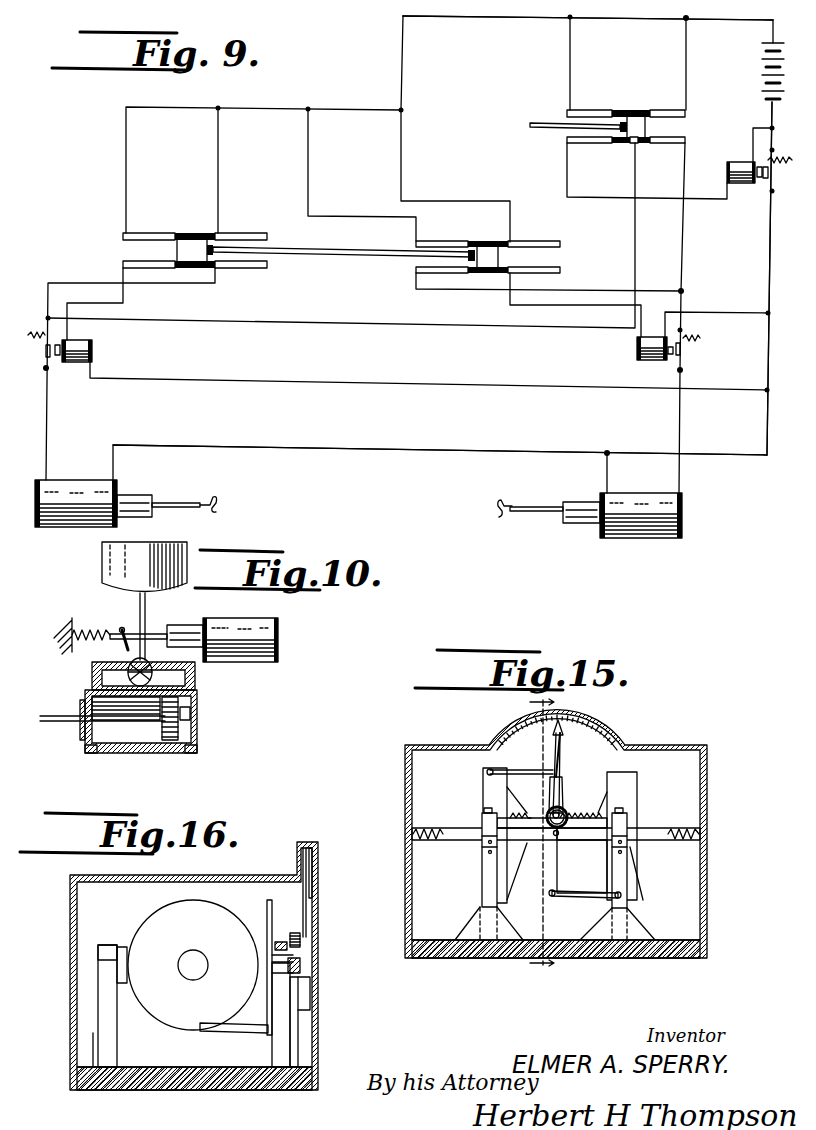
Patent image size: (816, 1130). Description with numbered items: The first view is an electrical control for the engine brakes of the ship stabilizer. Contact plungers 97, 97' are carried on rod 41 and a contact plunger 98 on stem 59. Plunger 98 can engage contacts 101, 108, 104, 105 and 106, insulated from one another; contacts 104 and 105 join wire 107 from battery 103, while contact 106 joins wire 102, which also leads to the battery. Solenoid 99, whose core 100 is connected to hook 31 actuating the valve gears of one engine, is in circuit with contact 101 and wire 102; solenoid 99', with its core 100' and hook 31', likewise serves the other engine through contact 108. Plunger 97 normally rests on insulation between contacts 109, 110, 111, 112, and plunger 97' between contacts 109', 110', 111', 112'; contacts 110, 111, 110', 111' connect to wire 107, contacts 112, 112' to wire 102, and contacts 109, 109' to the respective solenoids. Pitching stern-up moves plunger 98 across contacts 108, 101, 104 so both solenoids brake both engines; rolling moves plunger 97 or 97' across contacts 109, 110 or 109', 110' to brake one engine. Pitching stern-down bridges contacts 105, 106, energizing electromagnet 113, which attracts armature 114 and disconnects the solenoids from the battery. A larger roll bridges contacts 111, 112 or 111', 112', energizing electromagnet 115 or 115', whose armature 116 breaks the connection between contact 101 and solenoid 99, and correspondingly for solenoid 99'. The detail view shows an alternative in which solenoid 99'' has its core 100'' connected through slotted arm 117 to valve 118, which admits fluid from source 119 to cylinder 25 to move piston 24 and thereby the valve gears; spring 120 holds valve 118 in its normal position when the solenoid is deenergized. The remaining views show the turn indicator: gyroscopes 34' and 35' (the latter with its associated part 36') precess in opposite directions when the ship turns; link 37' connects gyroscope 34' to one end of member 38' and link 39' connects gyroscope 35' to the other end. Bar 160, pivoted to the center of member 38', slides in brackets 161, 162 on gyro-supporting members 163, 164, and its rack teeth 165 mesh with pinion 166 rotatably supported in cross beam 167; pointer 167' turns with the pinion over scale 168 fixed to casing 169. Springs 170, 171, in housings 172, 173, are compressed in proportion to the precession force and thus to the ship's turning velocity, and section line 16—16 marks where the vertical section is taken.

In FIG. 9, the wire 107 is at (519, 18).
In FIG. 9, the battery 103 is at (762, 72).
In FIG. 9, the contact 105 is at (592, 110).
In FIG. 9, the contact 104 is at (662, 110).
In FIG. 9, the contact plunger 98 is at (630, 127).
In FIG. 9, the stem or rod 59 is at (571, 141).
In FIG. 9, the contact 101 is at (686, 140).
In FIG. 9, the contact 106 is at (592, 144).
In FIG. 9, the contact 108 is at (636, 144).
In FIG. 9, the armature 114 is at (768, 174).
In FIG. 9, the electromagnet 113 is at (741, 184).
In FIG. 9, the contact 111' is at (155, 222).
In FIG. 9, the contact 110' is at (253, 222).
In FIG. 9, the rod 41 is at (339, 251).
In FIG. 9, the contact 110 is at (445, 231).
In FIG. 9, the contact 111 is at (553, 231).
In FIG. 9, the contact plunger 97' is at (195, 250).
In FIG. 9, the contact plunger 97 is at (488, 257).
In FIG. 9, the contact 112' is at (127, 257).
In FIG. 9, the contact 109' is at (261, 277).
In FIG. 9, the contact 109 is at (424, 279).
In FIG. 9, the contact 112 is at (555, 276).
In FIG. 9, the electromagnet 115' is at (97, 350).
In FIG. 9, the electromagnet 115 is at (631, 352).
In FIG. 9, the armature 116 is at (47, 360).
In FIG. 9, the wire 102 is at (767, 456).
In FIG. 9, the solenoid core 100' is at (143, 493).
In FIG. 9, the pawl 31' is at (192, 490).
In FIG. 9, the solenoid 99' is at (75, 520).
In FIG. 9, the hook 31 is at (530, 496).
In FIG. 9, the core 100 is at (581, 498).
In FIG. 9, the solenoid 99 is at (642, 533).
In FIG. 10, the source 119 is at (144, 601).
In FIG. 10, the spring 120 is at (82, 630).
In FIG. 10, the slotted arm 117 is at (124, 651).
In FIG. 10, the valve 118 is at (150, 667).
In FIG. 10, the core 100'' is at (188, 624).
In FIG. 10, the solenoid 99'' is at (250, 654).
In FIG. 10, the cylinder 25 is at (120, 748).
In FIG. 10, the piston 24 is at (176, 750).
In FIG. 15, the section line 16 is at (535, 842).
In FIG. 15, the scale 168 is at (622, 741).
In FIG. 16, the scale 168 is at (299, 845).
In FIG. 15, the pointer 167' is at (580, 755).
In FIG. 16, the pointer 167' is at (331, 868).
In FIG. 15, the link 37' is at (520, 763).
In FIG. 15, the member 38' is at (574, 767).
In FIG. 16, the member 38' is at (255, 963).
In FIG. 15, the gyroscope 34' is at (483, 829).
In FIG. 15, the frame 36' is at (635, 832).
In FIG. 15, the housing 172 is at (426, 828).
In FIG. 15, the housing 173 is at (683, 817).
In FIG. 15, the casing 169 is at (707, 802).
In FIG. 16, the casing 169 is at (71, 987).
In FIG. 15, the spring 170 is at (405, 832).
In FIG. 15, the spring 171 is at (707, 842).
In FIG. 15, the cross beam 167 is at (540, 797).
In FIG. 16, the cross beam 167 is at (252, 967).
In FIG. 15, the pinion 166 is at (565, 816).
In FIG. 16, the pinion 166 is at (293, 933).
In FIG. 15, the rack teeth 165 is at (532, 835).
In FIG. 15, the bar 160 is at (575, 840).
In FIG. 16, the bar 160 is at (300, 965).
In FIG. 15, the bracket 161 is at (483, 857).
In FIG. 15, the bracket 162 is at (630, 870).
In FIG. 16, the bracket 162 is at (300, 978).
In FIG. 15, the gyro-supporting member 163 is at (478, 905).
In FIG. 15, the gyro-supporting member 164 is at (630, 908).
In FIG. 16, the gyro-supporting member 164 is at (280, 1056).
In FIG. 15, the link 39' is at (585, 908).
In FIG. 16, the link 39' is at (215, 1042).
In FIG. 16, the gyroscope 35' is at (193, 965).